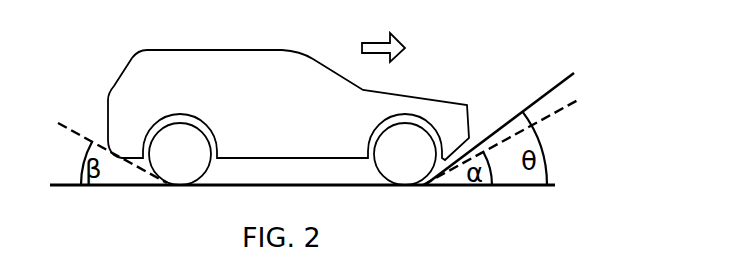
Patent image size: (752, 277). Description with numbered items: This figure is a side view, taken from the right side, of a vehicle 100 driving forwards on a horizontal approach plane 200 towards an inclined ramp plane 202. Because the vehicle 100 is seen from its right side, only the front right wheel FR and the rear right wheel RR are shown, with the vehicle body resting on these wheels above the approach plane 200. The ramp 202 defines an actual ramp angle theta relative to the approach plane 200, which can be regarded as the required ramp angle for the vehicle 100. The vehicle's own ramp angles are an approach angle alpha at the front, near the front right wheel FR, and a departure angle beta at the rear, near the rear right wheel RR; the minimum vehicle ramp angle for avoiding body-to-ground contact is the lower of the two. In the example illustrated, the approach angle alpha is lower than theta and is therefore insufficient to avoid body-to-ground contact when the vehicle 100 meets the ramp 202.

The vehicle 100 is at (319, 119).
The approach plane 200 is at (255, 187).
The ramp plane 202 is at (574, 75).
The rear right wheel RR is at (178, 165).
The front right wheel FR is at (398, 177).